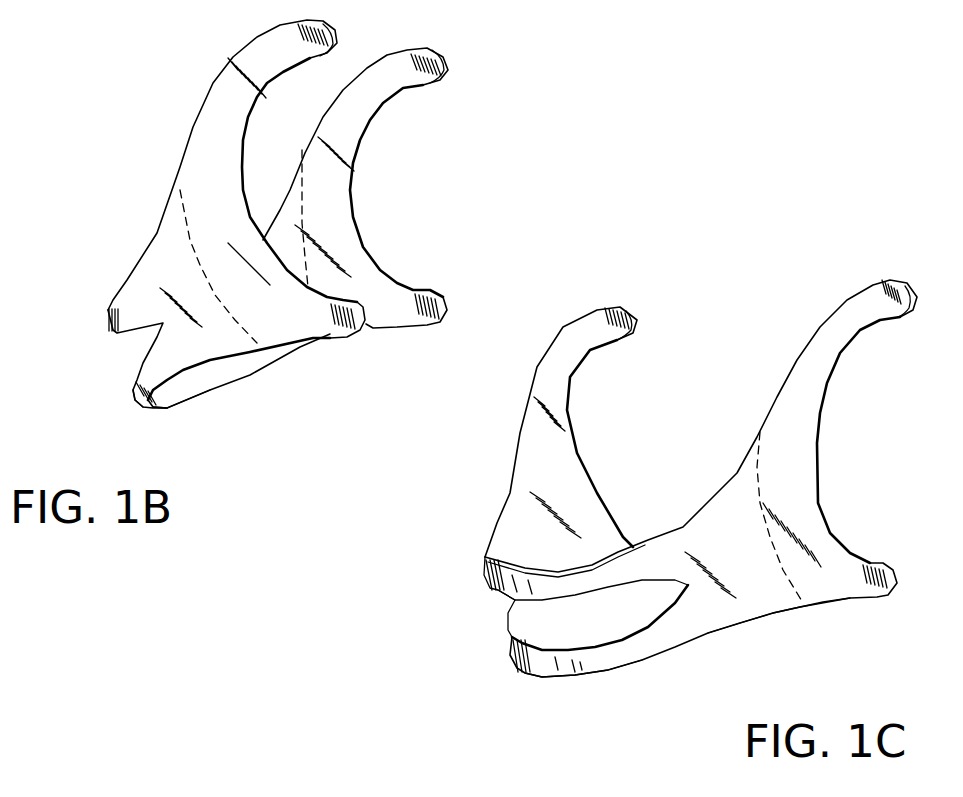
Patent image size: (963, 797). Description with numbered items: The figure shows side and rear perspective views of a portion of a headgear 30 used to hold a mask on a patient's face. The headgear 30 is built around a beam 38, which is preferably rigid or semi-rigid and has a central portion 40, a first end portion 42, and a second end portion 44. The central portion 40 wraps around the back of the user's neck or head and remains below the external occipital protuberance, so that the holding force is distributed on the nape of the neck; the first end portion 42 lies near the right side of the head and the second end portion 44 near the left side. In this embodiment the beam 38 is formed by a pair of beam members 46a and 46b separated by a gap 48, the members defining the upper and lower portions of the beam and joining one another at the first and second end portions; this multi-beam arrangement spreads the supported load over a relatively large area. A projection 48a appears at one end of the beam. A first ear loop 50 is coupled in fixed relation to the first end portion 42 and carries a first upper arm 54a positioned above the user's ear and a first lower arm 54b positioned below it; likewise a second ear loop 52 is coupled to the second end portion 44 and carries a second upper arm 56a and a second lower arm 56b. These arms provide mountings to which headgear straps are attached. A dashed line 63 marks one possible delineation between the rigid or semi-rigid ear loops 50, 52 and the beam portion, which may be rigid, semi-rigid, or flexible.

In FIG. 1B, the headgear 30 is at (125, 91).
In FIG. 1C, the headgear 30 is at (762, 228).
In FIG. 1B, the beam 38 is at (247, 363).
In FIG. 1C, the beam 38 is at (743, 623).
In FIG. 1B, the central portion 40 is at (157, 413).
In FIG. 1C, the central portion 40 is at (552, 683).
In FIG. 1B, the first end portion 42 is at (200, 313).
In FIG. 1C, the first end portion 42 is at (710, 587).
In FIG. 1B, the second end portion 44 is at (297, 260).
In FIG. 1C, the second end portion 44 is at (503, 510).
In FIG. 1C, the beam member 46a is at (498, 590).
In FIG. 1B, the beam member 46b is at (133, 395).
In FIG. 1C, the beam member 46b is at (510, 667).
In FIG. 1B, the gap 48 is at (137, 370).
In FIG. 1C, the gap 48 is at (630, 632).
In FIG. 1B, the knob projection 48a is at (110, 313).
In FIG. 1B, the first ear loop 50 is at (203, 180).
In FIG. 1C, the first ear loop 50 is at (800, 447).
In FIG. 1B, the second ear loop 52 is at (357, 160).
In FIG. 1C, the second ear loop 52 is at (540, 435).
In FIG. 1B, the first upper arm 54a is at (323, 38).
In FIG. 1C, the first upper arm 54a is at (897, 292).
In FIG. 1B, the first lower arm 54b is at (357, 317).
In FIG. 1C, the first lower arm 54b is at (878, 598).
In FIG. 1B, the second upper arm 56a is at (437, 67).
In FIG. 1C, the second upper arm 56a is at (637, 322).
In FIG. 1B, the second lower arm 56b is at (445, 303).
In FIG. 1B, the dashed line 63 is at (190, 246).
In FIG. 1C, the dashed line 63 is at (757, 500).